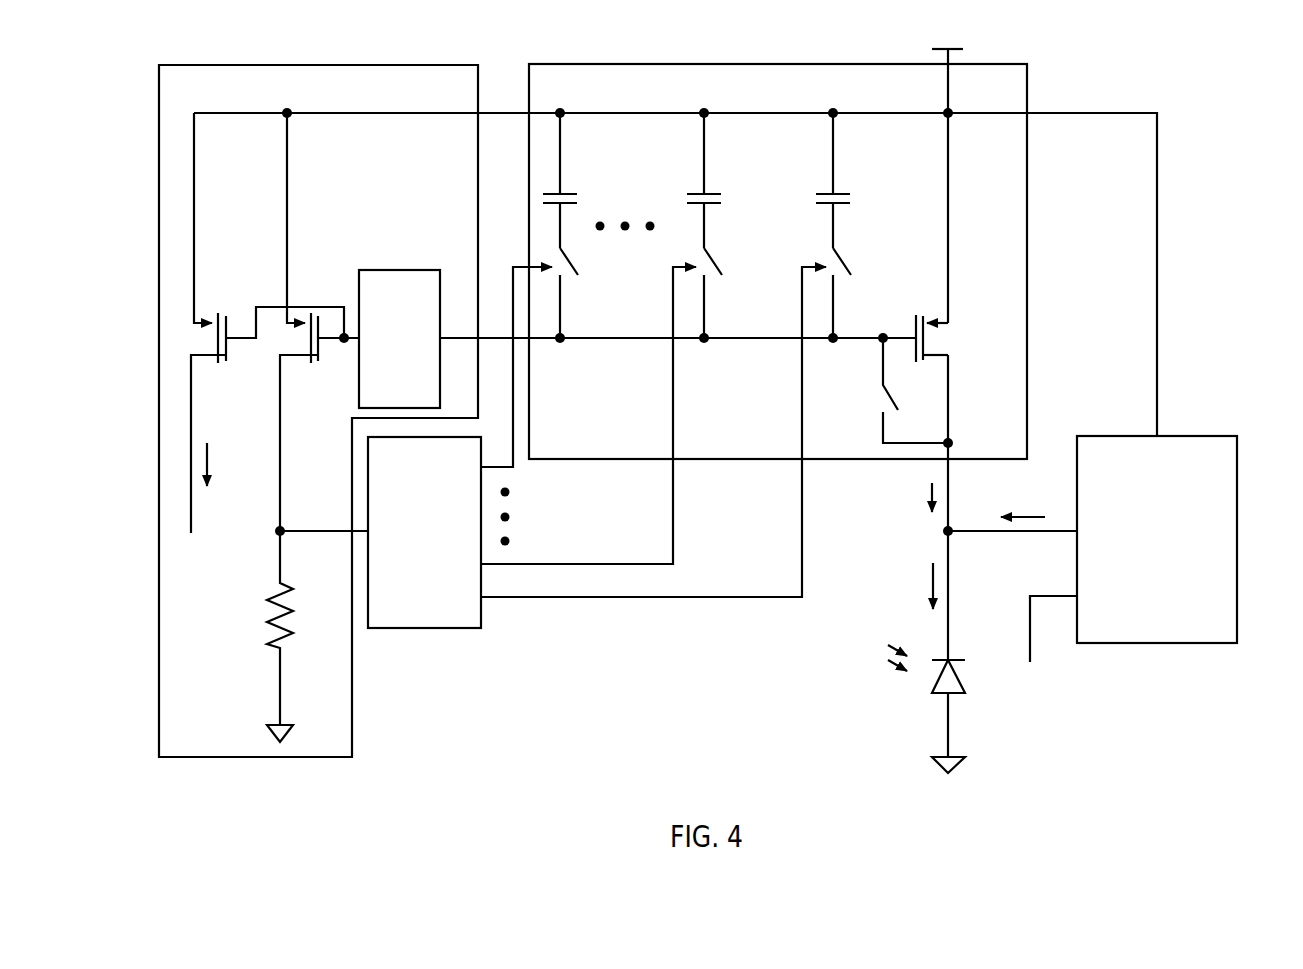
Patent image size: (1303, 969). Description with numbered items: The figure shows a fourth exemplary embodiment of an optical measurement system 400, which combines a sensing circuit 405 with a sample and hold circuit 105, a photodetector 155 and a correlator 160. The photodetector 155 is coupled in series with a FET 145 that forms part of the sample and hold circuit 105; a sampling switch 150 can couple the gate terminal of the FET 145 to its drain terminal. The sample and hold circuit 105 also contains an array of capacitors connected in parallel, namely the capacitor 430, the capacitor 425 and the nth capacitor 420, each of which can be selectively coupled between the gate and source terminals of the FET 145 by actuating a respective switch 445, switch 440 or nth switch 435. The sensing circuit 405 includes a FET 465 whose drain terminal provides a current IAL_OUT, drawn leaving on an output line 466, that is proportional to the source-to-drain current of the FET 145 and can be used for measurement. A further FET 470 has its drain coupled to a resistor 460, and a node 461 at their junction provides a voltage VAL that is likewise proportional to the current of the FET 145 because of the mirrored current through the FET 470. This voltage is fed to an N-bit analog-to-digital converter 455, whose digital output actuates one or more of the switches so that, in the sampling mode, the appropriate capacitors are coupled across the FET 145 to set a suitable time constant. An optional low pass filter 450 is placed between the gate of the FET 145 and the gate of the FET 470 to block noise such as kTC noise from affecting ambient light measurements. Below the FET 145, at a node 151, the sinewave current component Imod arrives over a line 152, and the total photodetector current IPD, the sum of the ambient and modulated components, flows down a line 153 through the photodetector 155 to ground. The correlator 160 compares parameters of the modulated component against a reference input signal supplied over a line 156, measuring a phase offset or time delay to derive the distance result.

The optical measurement system 400 is at (1232, 197).
The sensing circuit 405 is at (461, 94).
The sample and hold circuit 105 is at (886, 92).
The nth capacitor 420 is at (592, 195).
The capacitor 425 is at (735, 195).
The capacitor 430 is at (865, 196).
The nth switch 435 is at (592, 263).
The switch 440 is at (735, 263).
The switch 445 is at (865, 263).
The low pass filter 450 is at (415, 299).
The N-bit analog-to-digital converter 455 is at (474, 464).
The resistor 460 is at (306, 634).
The node 461 is at (264, 535).
The FET 465 is at (238, 357).
The ambient light current output 466 is at (218, 417).
The FET 470 is at (298, 368).
The FET 145 is at (982, 336).
The sampling switch 150 is at (870, 405).
The node 151 is at (950, 512).
The line 152 is at (980, 533).
The photodiode current path 153 is at (948, 573).
The photodetector 155 is at (983, 682).
The line 156 is at (1028, 628).
The correlator 160 is at (1190, 436).